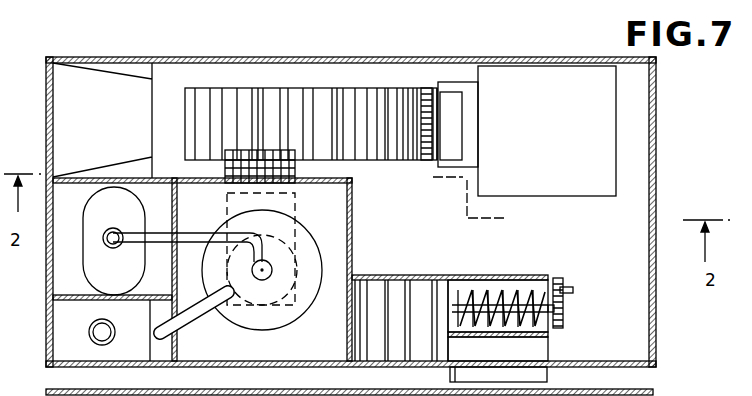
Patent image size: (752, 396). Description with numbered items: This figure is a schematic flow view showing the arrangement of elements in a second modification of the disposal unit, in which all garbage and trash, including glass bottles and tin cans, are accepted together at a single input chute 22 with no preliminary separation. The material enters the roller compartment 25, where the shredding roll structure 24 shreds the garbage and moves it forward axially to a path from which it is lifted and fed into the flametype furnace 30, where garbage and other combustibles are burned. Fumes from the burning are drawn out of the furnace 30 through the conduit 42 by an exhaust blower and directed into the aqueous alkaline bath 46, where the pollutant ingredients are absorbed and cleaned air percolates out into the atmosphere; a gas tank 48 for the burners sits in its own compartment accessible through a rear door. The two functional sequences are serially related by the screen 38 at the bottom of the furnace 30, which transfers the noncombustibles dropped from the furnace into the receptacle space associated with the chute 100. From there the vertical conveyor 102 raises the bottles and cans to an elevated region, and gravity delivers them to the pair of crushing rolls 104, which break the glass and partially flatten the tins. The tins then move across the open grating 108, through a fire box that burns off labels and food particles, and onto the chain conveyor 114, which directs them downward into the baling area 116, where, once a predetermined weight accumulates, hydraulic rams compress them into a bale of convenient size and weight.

The chute 100 is at (120, 80).
The vertical conveyor 102 is at (213, 84).
The crushing rolls 104 is at (401, 84).
The open grating 108 is at (427, 90).
The chain conveyor 114 is at (472, 97).
The baling area 116 is at (543, 82).
The screen 38 is at (297, 168).
The gas tank 48 is at (88, 258).
The aqueous alkaline bath 46 is at (67, 332).
The flametype furnace 30 is at (303, 308).
The conduit 42 is at (192, 323).
The shredding roll structure 24 is at (467, 297).
The roller compartment 25 is at (520, 290).
The chute 22 is at (547, 368).